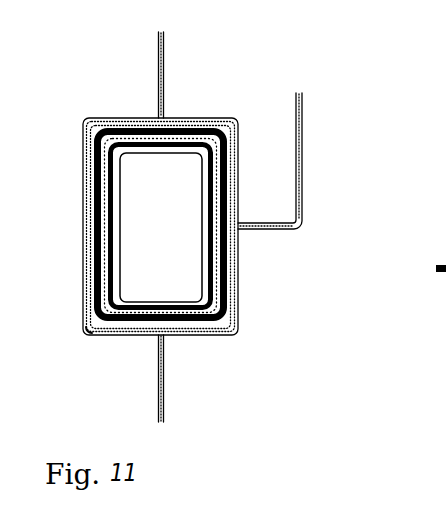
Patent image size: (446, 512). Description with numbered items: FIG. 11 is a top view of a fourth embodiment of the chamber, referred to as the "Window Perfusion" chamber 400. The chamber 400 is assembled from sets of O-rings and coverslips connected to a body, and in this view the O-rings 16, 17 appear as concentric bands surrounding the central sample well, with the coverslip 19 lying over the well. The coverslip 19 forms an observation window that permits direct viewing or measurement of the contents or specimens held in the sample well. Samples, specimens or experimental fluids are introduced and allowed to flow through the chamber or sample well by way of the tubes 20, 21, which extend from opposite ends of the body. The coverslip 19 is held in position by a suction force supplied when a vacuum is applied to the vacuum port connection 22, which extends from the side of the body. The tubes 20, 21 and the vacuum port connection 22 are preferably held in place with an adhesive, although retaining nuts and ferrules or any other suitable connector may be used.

The O-ring 16 is at (214, 299).
The O-ring 17 is at (212, 263).
The coverslip 19 is at (96, 333).
The tube 20 is at (165, 383).
The tube 21 is at (165, 62).
The vacuum port connection 22 is at (308, 147).
The Window Perfusion chamber 400 is at (212, 248).